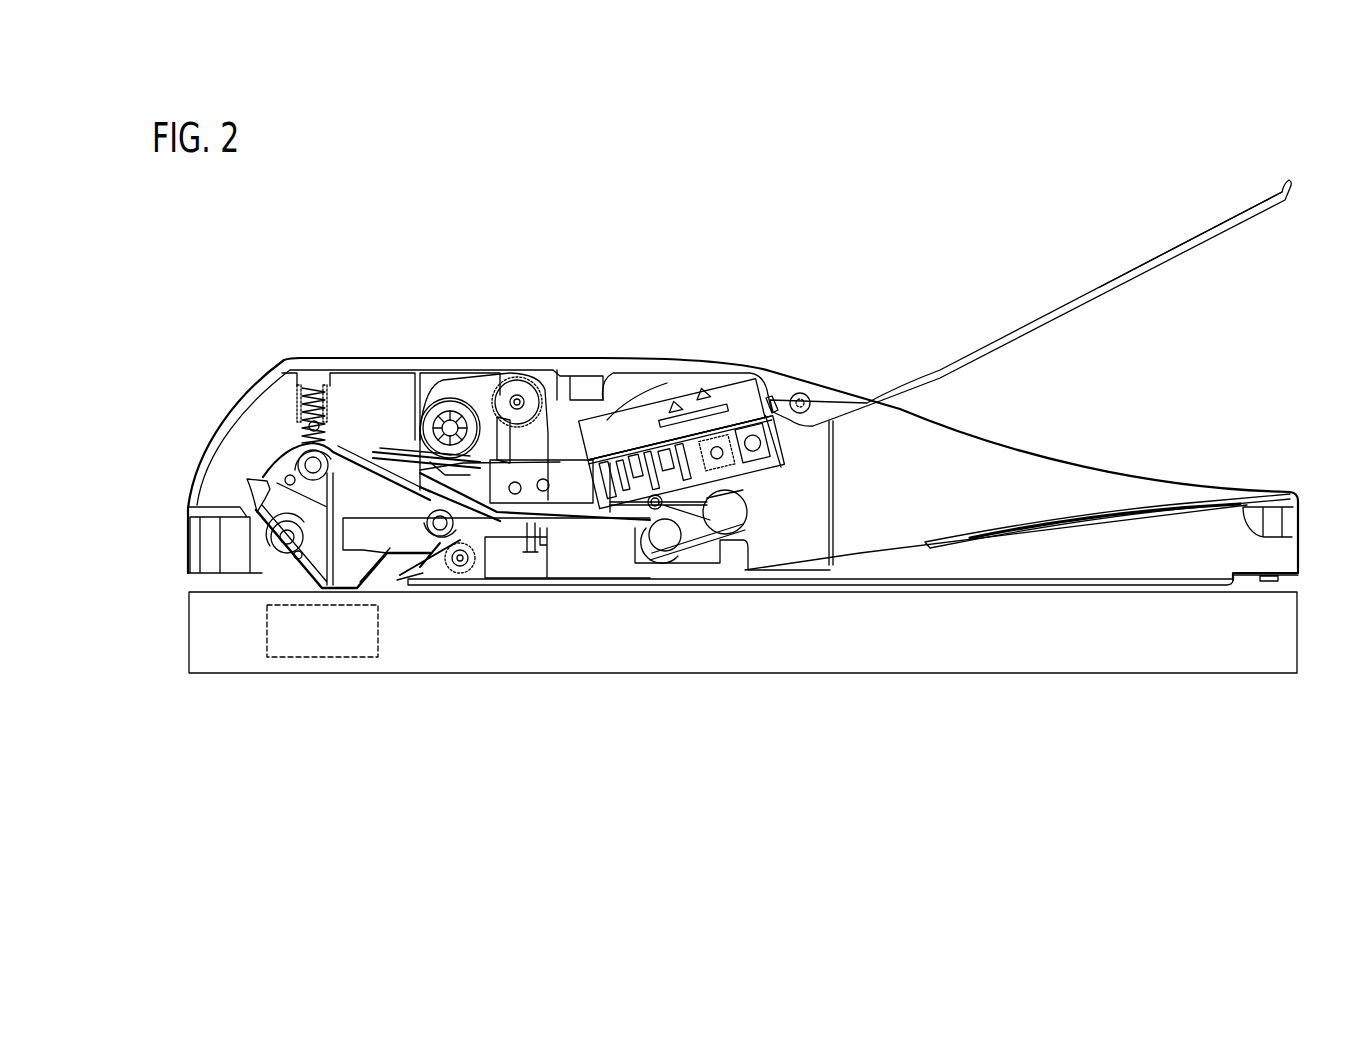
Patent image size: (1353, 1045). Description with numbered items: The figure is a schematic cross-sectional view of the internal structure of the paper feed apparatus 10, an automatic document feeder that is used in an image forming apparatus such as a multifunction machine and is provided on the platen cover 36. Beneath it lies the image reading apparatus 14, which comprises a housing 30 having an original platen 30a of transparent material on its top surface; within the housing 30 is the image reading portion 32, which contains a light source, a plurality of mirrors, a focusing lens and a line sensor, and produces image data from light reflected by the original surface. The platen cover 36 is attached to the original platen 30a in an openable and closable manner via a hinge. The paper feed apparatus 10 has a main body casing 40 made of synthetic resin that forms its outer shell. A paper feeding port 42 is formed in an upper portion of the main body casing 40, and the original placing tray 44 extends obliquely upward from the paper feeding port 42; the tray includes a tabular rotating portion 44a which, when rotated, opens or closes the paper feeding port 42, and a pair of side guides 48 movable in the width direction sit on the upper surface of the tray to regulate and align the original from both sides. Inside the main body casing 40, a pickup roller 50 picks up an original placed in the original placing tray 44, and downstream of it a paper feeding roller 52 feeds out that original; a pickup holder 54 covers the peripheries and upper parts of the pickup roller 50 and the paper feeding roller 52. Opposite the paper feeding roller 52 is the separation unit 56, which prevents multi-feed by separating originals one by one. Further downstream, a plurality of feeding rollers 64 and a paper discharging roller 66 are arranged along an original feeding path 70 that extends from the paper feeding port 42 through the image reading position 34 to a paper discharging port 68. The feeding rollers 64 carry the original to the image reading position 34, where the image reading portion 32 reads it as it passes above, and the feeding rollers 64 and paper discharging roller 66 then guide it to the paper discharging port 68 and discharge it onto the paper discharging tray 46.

The paper feed apparatus 10 is at (230, 384).
The image reading apparatus 14 is at (703, 664).
The housing 30 is at (840, 655).
The original platen 30a is at (503, 592).
The image reading portion 32 is at (302, 645).
The image reading position 34 is at (335, 590).
The platen cover 36 is at (1275, 557).
The main body casing 40 is at (208, 458).
The paper feeding port 42 is at (595, 440).
The original placing tray 44 is at (932, 352).
The rotating portion 44a is at (1119, 282).
The paper discharging tray 46 is at (870, 545).
The side guides 48 is at (700, 390).
The pickup roller 50 is at (517, 400).
The paper feeding roller 52 is at (447, 425).
The pickup holder 54 is at (478, 400).
The separation unit 56 is at (420, 440).
The feeding rollers 64 is at (300, 452).
The paper discharging roller 66 is at (720, 520).
The paper discharging port 68 is at (753, 497).
The original feeding path 70 is at (265, 461).